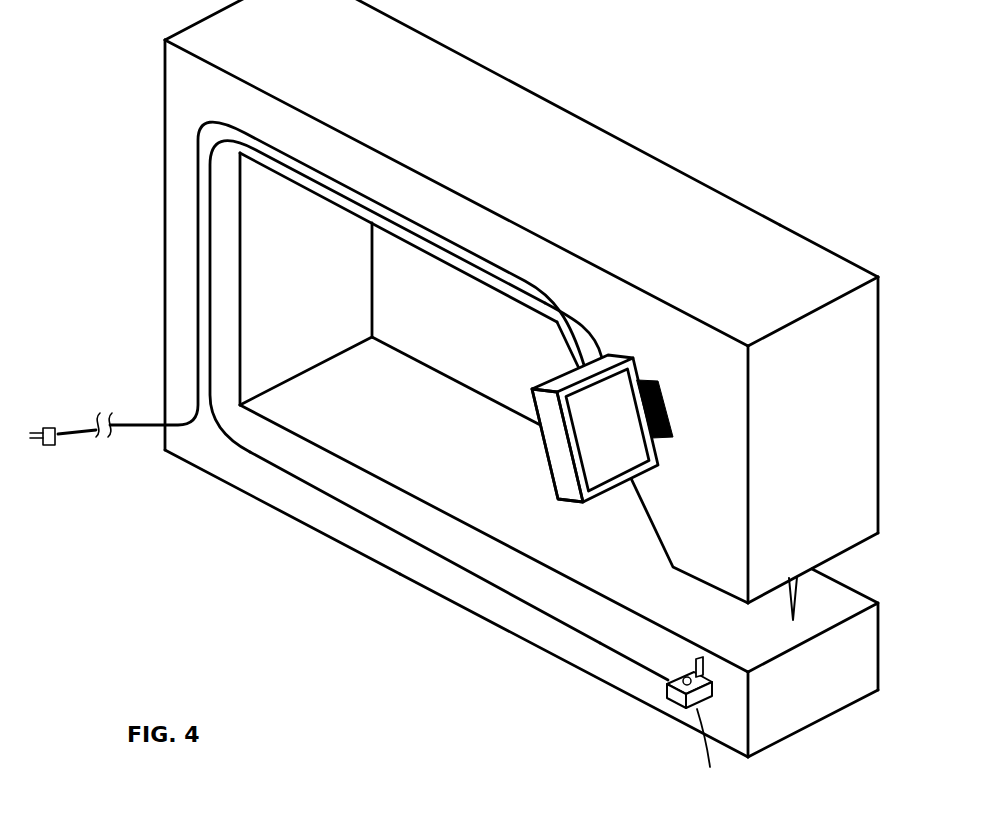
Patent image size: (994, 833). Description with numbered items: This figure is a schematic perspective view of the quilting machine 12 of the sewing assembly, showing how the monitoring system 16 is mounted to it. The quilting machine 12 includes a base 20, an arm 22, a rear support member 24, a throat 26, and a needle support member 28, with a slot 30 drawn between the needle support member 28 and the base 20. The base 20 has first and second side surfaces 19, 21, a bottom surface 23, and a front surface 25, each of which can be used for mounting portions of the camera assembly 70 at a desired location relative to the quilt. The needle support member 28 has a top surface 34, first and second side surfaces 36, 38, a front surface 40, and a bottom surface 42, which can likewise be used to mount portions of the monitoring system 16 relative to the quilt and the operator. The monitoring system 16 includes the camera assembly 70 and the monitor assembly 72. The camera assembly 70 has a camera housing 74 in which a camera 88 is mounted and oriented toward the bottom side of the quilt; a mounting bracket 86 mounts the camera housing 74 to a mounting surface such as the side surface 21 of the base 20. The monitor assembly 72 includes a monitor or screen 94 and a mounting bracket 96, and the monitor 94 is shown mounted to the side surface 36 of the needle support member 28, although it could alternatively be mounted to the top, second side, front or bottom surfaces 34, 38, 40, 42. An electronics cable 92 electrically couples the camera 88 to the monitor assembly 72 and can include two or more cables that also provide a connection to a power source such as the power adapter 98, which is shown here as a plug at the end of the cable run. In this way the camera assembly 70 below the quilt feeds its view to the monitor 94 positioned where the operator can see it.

The quilting machine 12 is at (474, 50).
The monitoring system 16 is at (540, 367).
The first side surface 19 is at (868, 698).
The base 20 is at (294, 537).
The second side surface 21 is at (591, 614).
The arm 22 is at (566, 110).
The bottom surface 23 is at (570, 673).
The rear support member 24 is at (164, 248).
The front surface 25 is at (782, 728).
The throat 26 is at (343, 302).
The needle support member 28 is at (827, 240).
The slot 30 is at (797, 616).
The top surface 34 is at (808, 309).
The first side surface 36 is at (699, 509).
The second side surface 38 is at (833, 253).
The front surface 40 is at (831, 497).
The bottom surface 42 is at (835, 560).
The camera assembly 70 is at (653, 701).
The monitor assembly 72 is at (589, 518).
The camera housing 74 is at (699, 750).
The mounting bracket 86 is at (707, 660).
The camera 88 is at (682, 676).
The electronics cable 92 is at (444, 557).
The monitor 94 is at (548, 463).
The mounting bracket 96 is at (673, 406).
The power adapter 98 is at (218, 124).